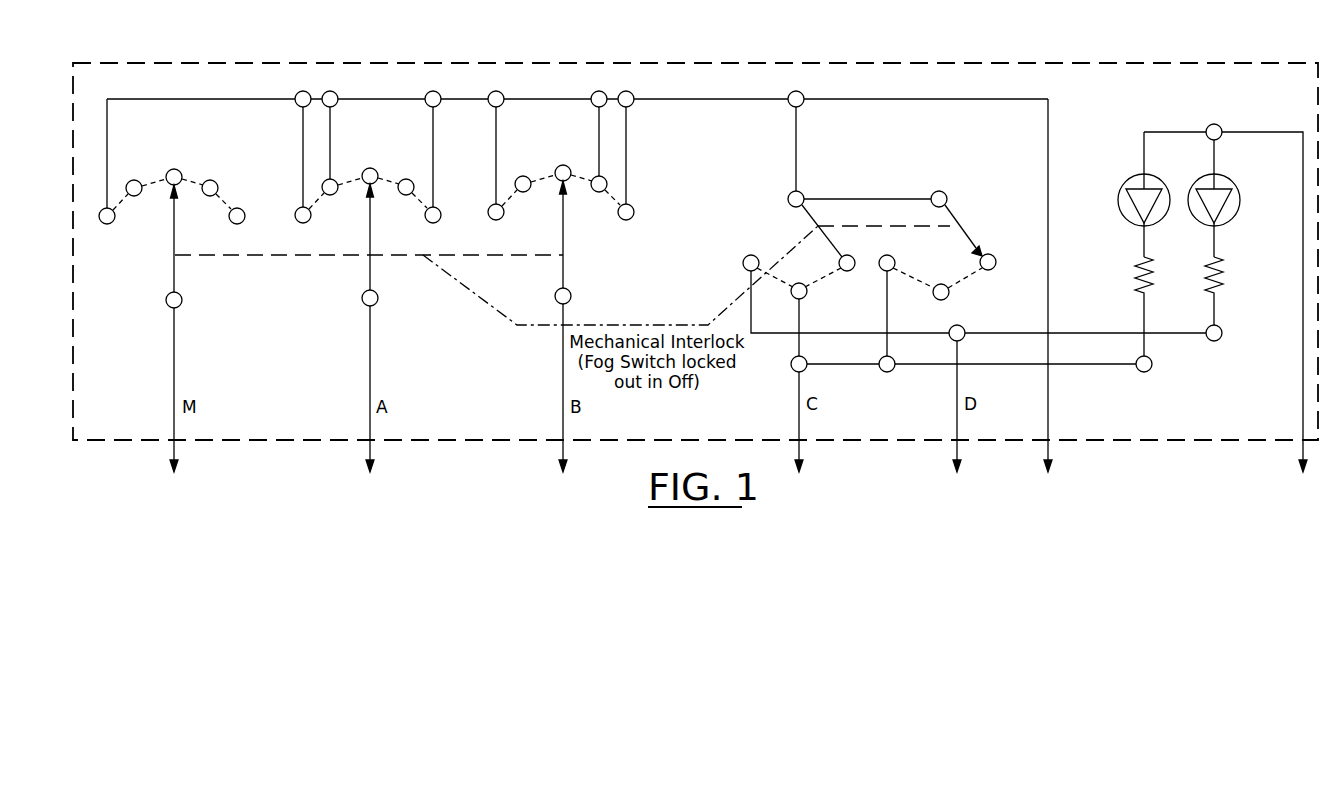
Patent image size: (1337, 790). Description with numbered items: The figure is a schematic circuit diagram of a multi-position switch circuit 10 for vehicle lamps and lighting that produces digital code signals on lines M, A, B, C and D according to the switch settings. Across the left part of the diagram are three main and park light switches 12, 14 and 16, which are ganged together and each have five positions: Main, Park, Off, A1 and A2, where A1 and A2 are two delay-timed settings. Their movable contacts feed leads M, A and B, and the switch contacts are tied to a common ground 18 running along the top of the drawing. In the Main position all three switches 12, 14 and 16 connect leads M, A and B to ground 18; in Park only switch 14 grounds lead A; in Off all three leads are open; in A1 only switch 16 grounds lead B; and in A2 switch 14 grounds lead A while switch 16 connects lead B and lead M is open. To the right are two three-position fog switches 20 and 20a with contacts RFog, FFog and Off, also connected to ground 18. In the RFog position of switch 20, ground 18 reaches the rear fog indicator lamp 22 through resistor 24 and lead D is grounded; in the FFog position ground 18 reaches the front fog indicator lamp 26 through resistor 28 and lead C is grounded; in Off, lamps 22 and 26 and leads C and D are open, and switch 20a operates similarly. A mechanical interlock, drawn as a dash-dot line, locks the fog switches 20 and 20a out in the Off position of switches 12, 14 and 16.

The multi-position switch circuit 10 is at (1000, 63).
The main and park light switch 12 is at (184, 148).
The main and park light switch 14 is at (374, 141).
The main and park light switch 16 is at (556, 135).
The ground 18 is at (1048, 182).
The fog switch 20 is at (811, 182).
The fog switch 20a is at (940, 189).
The rear fog indicator lamp 22 is at (1231, 221).
The resistor 24 is at (1226, 272).
The front fog indicator lamp 26 is at (1128, 223).
The resistor 28 is at (1136, 275).